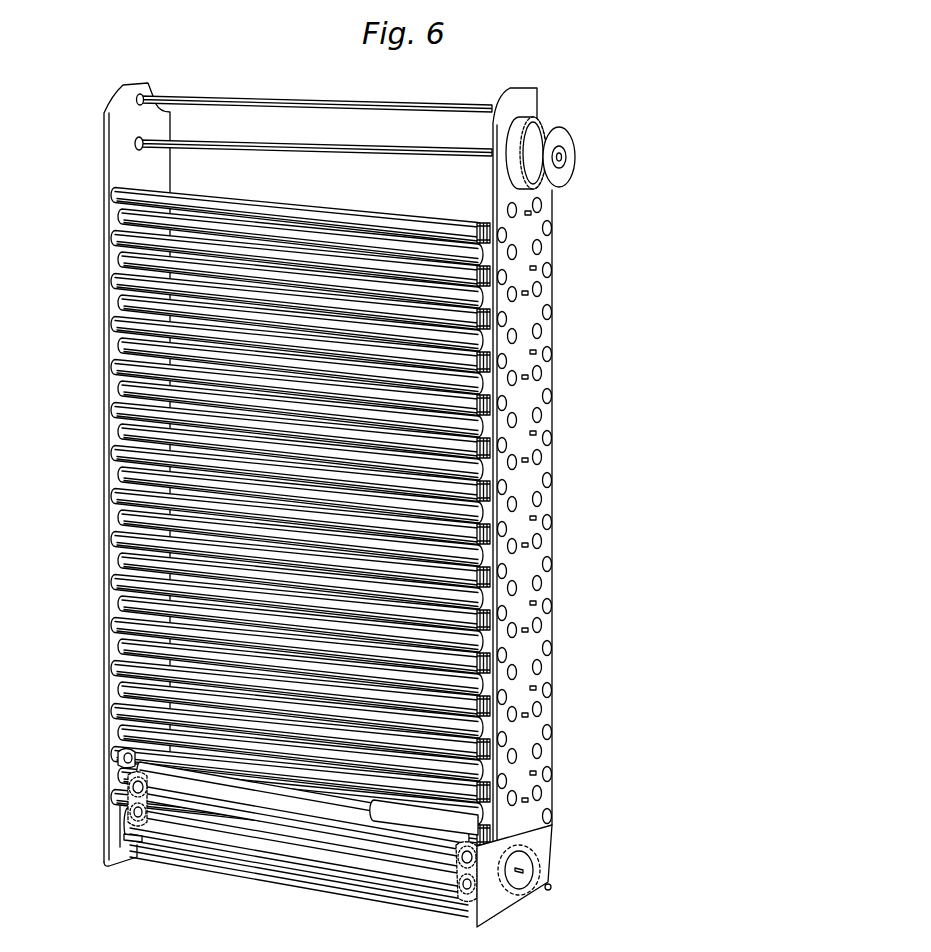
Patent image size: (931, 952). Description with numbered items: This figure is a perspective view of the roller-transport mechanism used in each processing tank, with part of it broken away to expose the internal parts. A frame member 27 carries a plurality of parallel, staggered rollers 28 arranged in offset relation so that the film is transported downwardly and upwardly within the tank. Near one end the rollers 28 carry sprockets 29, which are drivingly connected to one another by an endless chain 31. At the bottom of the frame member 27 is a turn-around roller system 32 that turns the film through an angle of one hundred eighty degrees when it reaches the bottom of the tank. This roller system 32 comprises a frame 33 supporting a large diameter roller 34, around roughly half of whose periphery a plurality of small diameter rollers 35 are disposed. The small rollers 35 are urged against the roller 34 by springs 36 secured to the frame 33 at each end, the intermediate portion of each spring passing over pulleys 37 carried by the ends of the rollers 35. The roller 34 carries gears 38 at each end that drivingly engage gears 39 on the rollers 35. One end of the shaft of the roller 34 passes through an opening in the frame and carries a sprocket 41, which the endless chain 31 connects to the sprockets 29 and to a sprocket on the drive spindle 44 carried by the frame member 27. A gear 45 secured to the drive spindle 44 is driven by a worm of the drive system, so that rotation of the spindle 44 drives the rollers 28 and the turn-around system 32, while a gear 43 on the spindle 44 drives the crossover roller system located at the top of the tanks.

The frame member 27 is at (104, 232).
The rollers 28 is at (118, 330).
The sprockets 29 is at (491, 537).
The endless chain 31 is at (540, 838).
The turn-around roller system 32 is at (232, 850).
The frame 33 is at (125, 840).
The large diameter roller 34 is at (210, 783).
The small diameter rollers 35 is at (287, 823).
The springs 36 is at (130, 806).
The pulleys 37 is at (128, 785).
The gears 38 is at (118, 760).
The gears 39 is at (130, 826).
The sprocket 41 is at (532, 874).
The gear 43 is at (533, 125).
The drive spindle 44 is at (412, 148).
The gear 45 is at (566, 163).